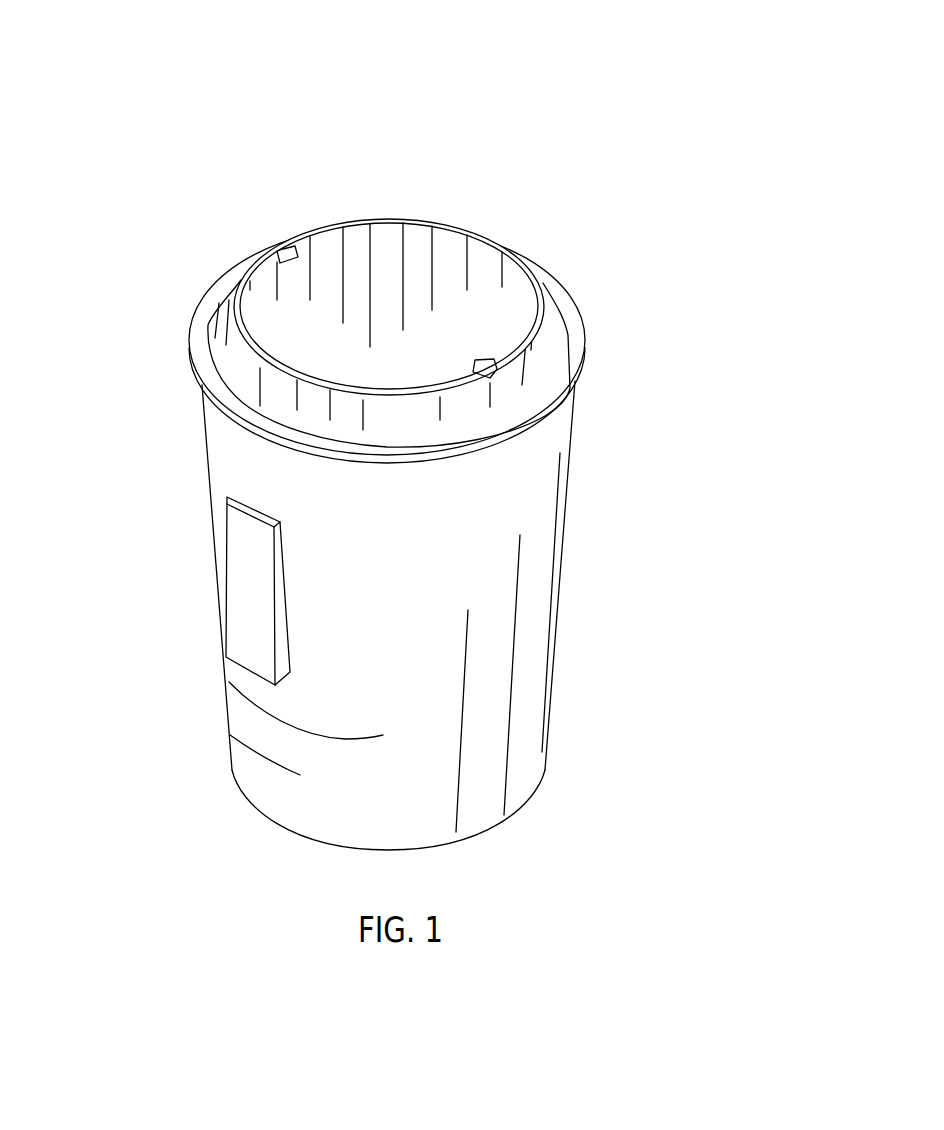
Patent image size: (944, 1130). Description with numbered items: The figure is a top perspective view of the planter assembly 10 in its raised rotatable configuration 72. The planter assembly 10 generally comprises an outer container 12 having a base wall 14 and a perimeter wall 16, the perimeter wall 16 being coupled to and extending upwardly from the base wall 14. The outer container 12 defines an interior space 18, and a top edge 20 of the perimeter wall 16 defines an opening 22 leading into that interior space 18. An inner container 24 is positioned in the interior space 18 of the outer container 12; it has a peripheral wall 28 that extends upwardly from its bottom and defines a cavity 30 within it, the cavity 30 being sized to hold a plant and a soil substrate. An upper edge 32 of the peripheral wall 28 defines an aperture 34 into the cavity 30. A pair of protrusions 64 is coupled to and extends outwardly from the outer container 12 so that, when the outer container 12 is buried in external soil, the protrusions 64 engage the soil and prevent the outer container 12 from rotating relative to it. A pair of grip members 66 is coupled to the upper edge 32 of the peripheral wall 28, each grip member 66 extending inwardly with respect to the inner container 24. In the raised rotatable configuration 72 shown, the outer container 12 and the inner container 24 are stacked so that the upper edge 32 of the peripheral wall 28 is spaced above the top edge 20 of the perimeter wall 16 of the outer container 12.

The planter assembly 10 is at (397, 496).
The outer container 12 is at (397, 549).
The base wall 14 is at (502, 822).
The perimeter wall 16 is at (417, 682).
The interior space 18 is at (560, 364).
The top edge 20 is at (563, 307).
The opening 22 is at (482, 411).
The inner container 24 is at (443, 192).
The peripheral wall 28 is at (260, 377).
The cavity 30 is at (323, 350).
The upper edge 32 is at (353, 219).
The aperture 34 is at (348, 376).
The pair of protrusions 64 is at (260, 613).
The pair of grip members 66 is at (294, 247).
The raised rotatable configuration 72 is at (229, 860).